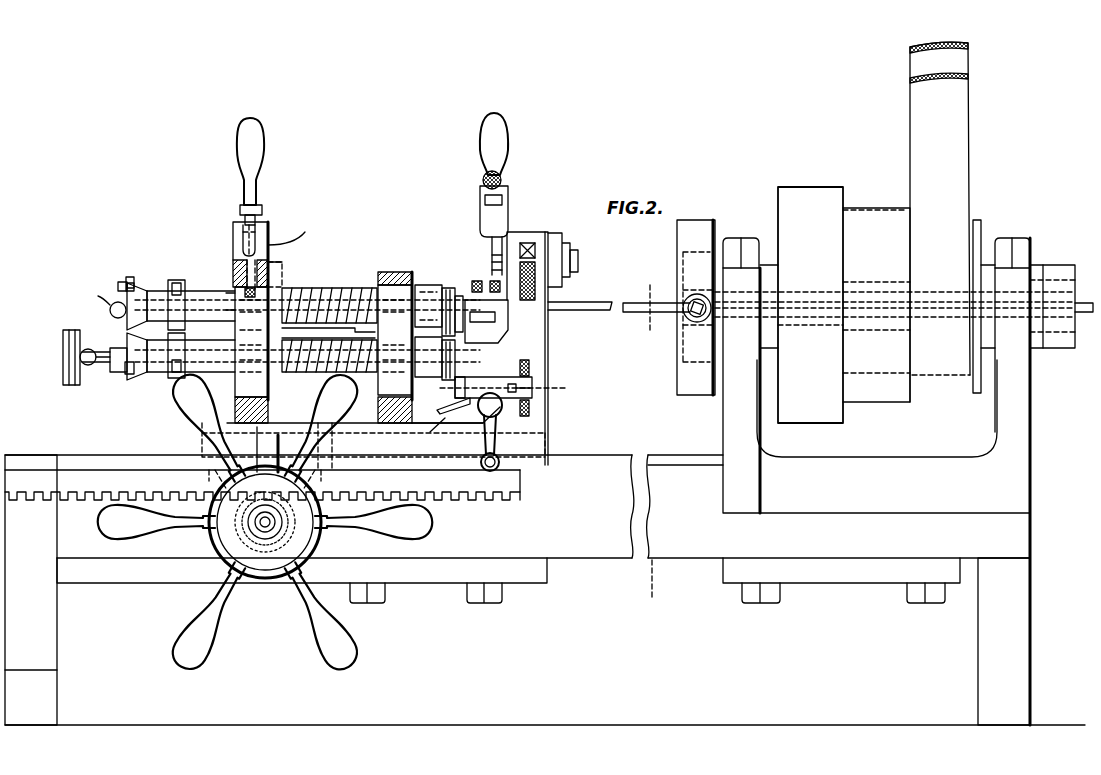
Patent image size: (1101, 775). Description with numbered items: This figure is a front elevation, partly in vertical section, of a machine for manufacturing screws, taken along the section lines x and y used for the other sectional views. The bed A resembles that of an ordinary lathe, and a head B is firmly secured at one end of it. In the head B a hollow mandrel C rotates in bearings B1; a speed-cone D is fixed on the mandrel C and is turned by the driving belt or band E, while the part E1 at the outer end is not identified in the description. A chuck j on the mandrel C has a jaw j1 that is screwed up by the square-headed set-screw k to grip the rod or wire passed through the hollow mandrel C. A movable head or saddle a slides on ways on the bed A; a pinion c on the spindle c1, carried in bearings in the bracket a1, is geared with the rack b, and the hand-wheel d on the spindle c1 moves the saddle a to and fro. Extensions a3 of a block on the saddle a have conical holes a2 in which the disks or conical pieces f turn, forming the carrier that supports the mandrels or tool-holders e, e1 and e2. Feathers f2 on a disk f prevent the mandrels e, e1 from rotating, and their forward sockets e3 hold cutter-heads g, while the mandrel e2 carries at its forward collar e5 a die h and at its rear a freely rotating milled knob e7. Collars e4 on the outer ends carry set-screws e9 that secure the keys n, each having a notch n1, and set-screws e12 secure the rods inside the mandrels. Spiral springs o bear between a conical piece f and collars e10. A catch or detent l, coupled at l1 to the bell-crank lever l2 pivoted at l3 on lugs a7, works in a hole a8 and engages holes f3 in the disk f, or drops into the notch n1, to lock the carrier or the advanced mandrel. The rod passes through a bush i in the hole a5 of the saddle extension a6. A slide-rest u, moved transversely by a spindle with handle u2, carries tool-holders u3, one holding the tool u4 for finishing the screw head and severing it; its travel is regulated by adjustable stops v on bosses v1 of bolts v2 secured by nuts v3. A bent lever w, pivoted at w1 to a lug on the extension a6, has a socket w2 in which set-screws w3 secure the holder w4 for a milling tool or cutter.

The bed A is at (517, 590).
The rack b is at (462, 500).
The pinion c is at (265, 522).
The spindle c1 is at (250, 516).
The hand-wheel d is at (265, 524).
The movable head or saddle a is at (373, 440).
The extension or bracket a1 is at (290, 447).
The disks or conical pieces f is at (323, 311).
The extensions a3 is at (238, 263).
The collar e10 is at (300, 280).
The bent or bell-crank lever l2 is at (250, 161).
The lugs a7 is at (240, 222).
The pivot l3 is at (240, 240).
The coupling l1 is at (262, 240).
The catch or detent l is at (258, 270).
The hole a8 is at (305, 243).
The holes a2 is at (270, 283).
The mandrel or tool-holder e is at (322, 290).
The collar or enlargement e5 is at (160, 285).
The collars e4 is at (178, 288).
The set-screws e9 is at (130, 278).
The strip or key n is at (160, 292).
The set-screws e12 is at (97, 295).
The mandrel or tool-holder e2 is at (118, 372).
The milled head or knob e7 is at (70, 386).
The notch n1 is at (226, 293).
The feathers f2 is at (225, 283).
The holes f3 is at (221, 307).
The spiral springs o is at (346, 291).
The mandrel or tool-holder e1 is at (305, 378).
The hollow collars or sockets e3 is at (432, 292).
The cutter-head g is at (458, 290).
The die h is at (457, 316).
The tool u4 is at (490, 322).
The bush i is at (538, 290).
The extension a6 is at (554, 300).
The hole a5 is at (546, 300).
The heads or bosses v1 is at (528, 243).
The bent arm or lever w is at (483, 178).
The set-screws w3 is at (500, 176).
The rod, bar, or holder w4 is at (482, 200).
The socket w2 is at (502, 199).
The pivot w1 is at (492, 252).
The slide-rest u is at (493, 387).
The adjustable stops v is at (522, 385).
The bolts or spindles v2 is at (498, 376).
The handle u2 is at (496, 437).
The tool-holder u3 is at (482, 432).
The section line y is at (462, 398).
The nuts v3 is at (465, 418).
The section line x is at (647, 445).
The head B is at (876, 481).
The bearings B1 is at (876, 375).
The speed-cone D is at (844, 305).
The driving belt or band E is at (945, 222).
The hollow mandrel C is at (895, 306).
The shaft end E1 is at (1084, 296).
The chuck j is at (669, 307).
The set-screw k is at (685, 315).
The jaw j1 is at (684, 302).